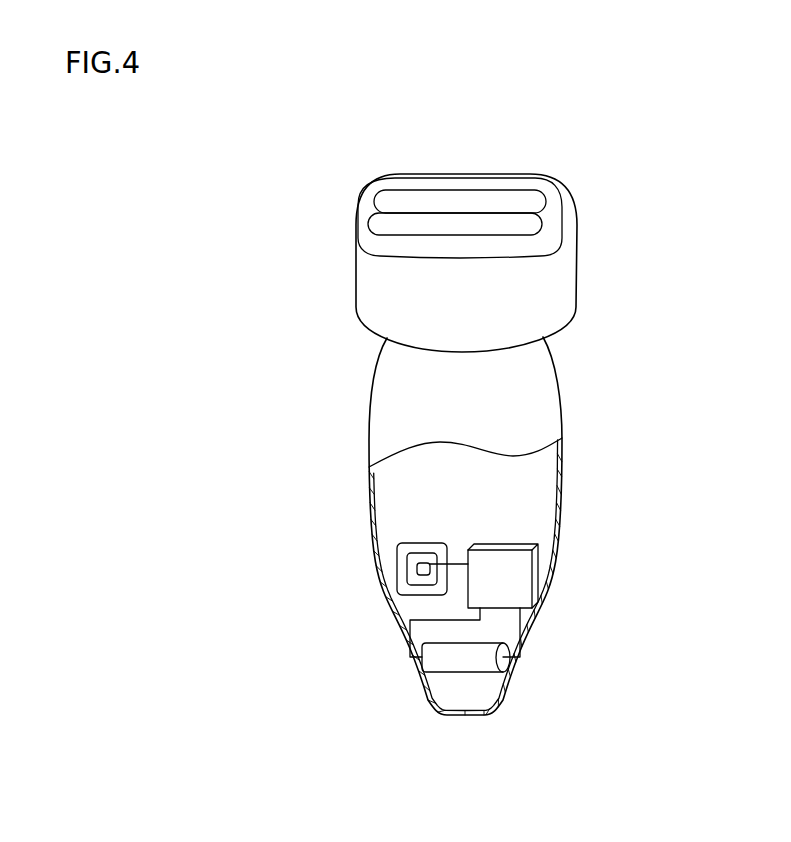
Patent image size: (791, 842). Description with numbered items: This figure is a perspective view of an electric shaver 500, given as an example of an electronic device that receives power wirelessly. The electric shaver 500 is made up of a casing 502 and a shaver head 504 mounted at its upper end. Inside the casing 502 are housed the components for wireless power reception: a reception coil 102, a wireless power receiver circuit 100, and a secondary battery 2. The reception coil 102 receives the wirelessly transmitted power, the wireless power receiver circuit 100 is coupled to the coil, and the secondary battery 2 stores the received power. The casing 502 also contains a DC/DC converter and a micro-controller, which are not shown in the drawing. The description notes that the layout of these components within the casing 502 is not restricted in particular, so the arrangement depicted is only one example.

The electric shaver 500 is at (481, 795).
The shaver head 504 is at (509, 194).
The casing 502 is at (562, 466).
The reception coil 102 is at (397, 573).
The wireless power receiver circuit 100 is at (518, 580).
The secondary battery 2 is at (477, 662).